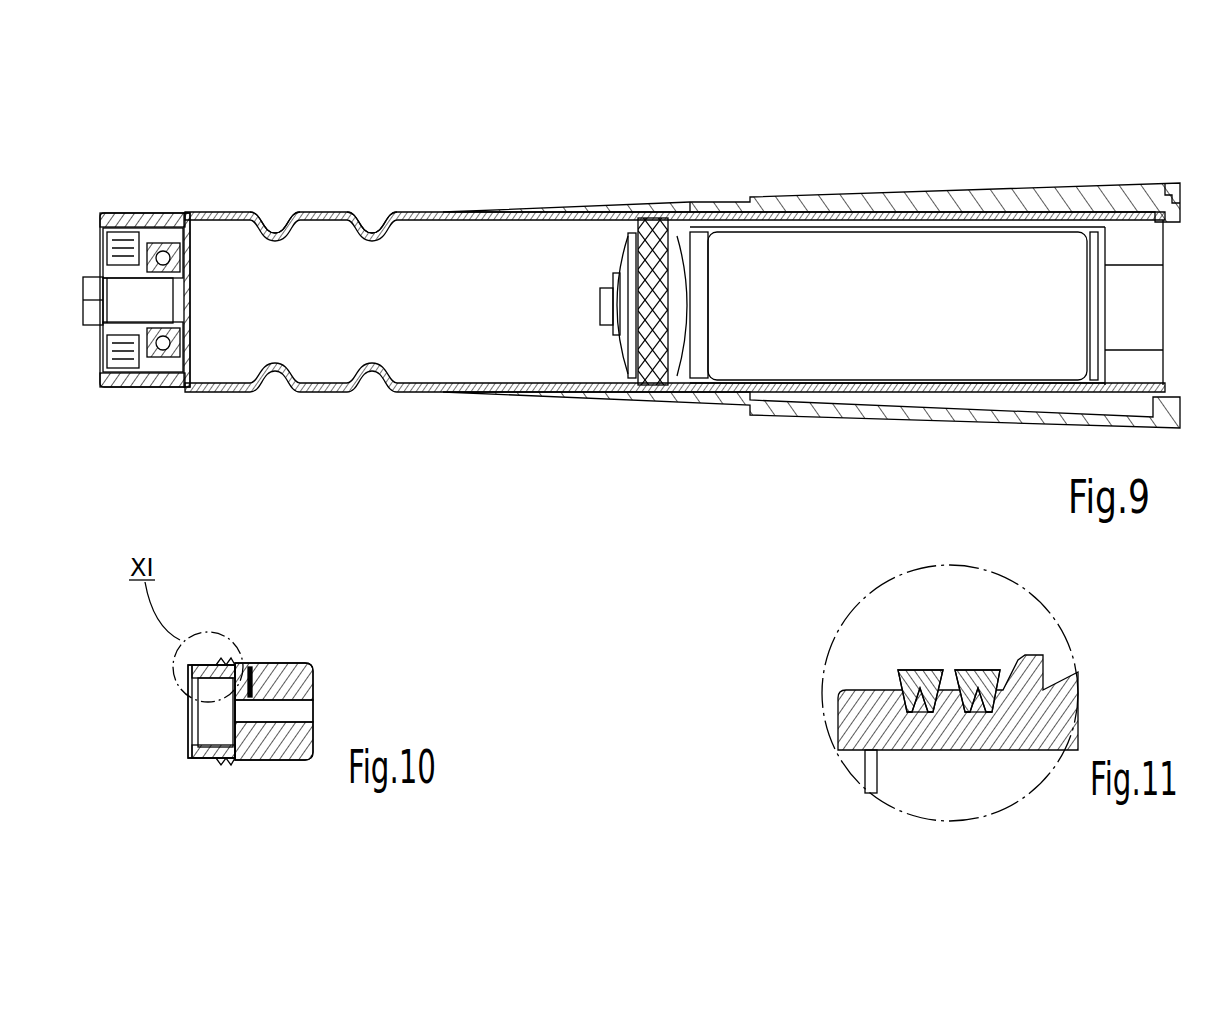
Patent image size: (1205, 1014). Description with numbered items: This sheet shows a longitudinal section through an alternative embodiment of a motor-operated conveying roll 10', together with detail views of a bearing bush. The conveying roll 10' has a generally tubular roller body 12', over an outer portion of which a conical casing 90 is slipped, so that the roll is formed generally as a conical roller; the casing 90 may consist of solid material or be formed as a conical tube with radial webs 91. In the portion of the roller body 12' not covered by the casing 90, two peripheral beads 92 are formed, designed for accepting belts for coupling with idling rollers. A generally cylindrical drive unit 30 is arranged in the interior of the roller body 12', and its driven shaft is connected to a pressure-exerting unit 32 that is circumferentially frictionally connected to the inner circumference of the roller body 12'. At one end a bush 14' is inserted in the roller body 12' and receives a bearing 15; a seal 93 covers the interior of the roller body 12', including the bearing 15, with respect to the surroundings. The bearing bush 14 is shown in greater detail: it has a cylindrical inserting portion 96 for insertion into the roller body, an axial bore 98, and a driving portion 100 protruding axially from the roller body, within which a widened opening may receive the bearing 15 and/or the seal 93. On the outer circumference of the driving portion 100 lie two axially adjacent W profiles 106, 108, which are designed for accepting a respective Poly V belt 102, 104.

In FIG. 9, the conveying roll 10' is at (1061, 88).
In FIG. 9, the roller body 12' is at (675, 245).
In FIG. 9, the end cap 14' is at (124, 243).
In FIG. 9, the bearing 15 is at (172, 235).
In FIG. 9, the seal 93 is at (97, 241).
In FIG. 9, the peripheral beads 92 is at (377, 215).
In FIG. 9, the casing 90 is at (897, 207).
In FIG. 9, the radial webs 91 is at (972, 400).
In FIG. 9, the pressure-exerting unit 32 is at (615, 370).
In FIG. 9, the drive unit 30 is at (797, 340).
In FIG. 10, the bush 14 is at (318, 637).
In FIG. 10, the cylindrical inserting portion 96 is at (273, 665).
In FIG. 10, the axial bore 98 is at (272, 712).
In FIG. 10, the driving portion 100 is at (206, 772).
In FIG. 11, the driving portion 100 is at (862, 682).
In FIG. 11, the Poly V belt 102 is at (919, 690).
In FIG. 11, the Poly V belt 104 is at (975, 690).
In FIG. 11, the W profile 106 is at (917, 735).
In FIG. 11, the W profile 108 is at (977, 737).